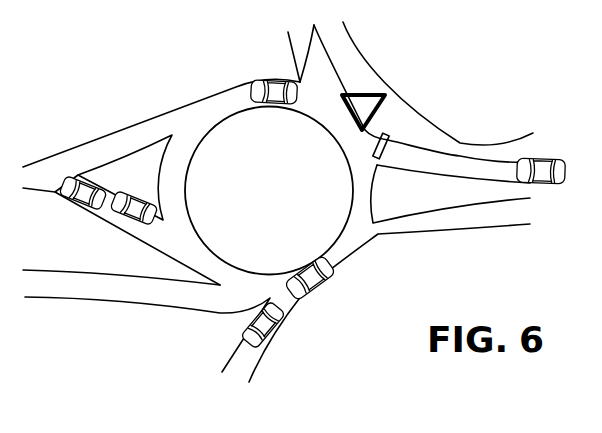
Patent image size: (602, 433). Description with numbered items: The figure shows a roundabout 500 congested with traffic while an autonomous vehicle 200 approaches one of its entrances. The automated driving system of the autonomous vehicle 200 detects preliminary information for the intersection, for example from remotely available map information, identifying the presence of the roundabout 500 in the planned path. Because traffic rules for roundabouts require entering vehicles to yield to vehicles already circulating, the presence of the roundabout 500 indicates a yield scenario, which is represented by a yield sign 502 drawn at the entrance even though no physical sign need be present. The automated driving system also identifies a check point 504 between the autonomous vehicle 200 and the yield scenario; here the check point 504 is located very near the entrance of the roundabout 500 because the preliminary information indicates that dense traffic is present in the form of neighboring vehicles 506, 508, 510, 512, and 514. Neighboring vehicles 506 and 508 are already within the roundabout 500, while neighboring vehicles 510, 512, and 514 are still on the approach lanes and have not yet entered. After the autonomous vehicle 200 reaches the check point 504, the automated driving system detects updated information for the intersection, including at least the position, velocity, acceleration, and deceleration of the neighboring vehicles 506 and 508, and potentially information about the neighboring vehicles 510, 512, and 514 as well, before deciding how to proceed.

The autonomous vehicle 200 is at (540, 158).
The roundabout 500 is at (256, 188).
The yield sign 502 is at (362, 95).
The check point 504 is at (386, 151).
The neighboring vehicle 506 is at (276, 86).
The neighboring vehicle 508 is at (315, 298).
The neighboring vehicle 510 is at (275, 332).
The neighboring vehicle 512 is at (139, 199).
The neighboring vehicle 514 is at (82, 203).